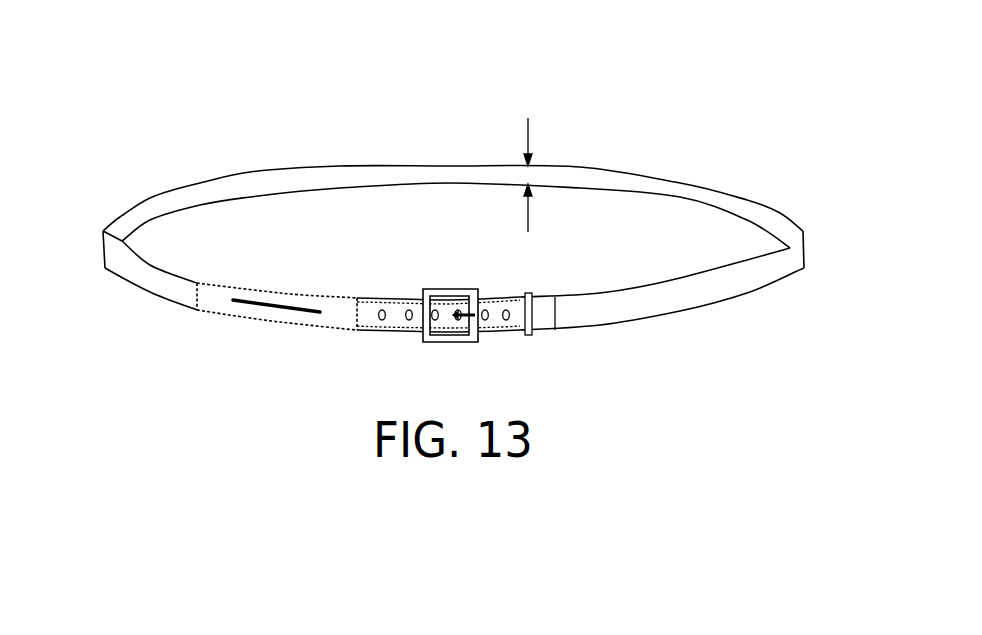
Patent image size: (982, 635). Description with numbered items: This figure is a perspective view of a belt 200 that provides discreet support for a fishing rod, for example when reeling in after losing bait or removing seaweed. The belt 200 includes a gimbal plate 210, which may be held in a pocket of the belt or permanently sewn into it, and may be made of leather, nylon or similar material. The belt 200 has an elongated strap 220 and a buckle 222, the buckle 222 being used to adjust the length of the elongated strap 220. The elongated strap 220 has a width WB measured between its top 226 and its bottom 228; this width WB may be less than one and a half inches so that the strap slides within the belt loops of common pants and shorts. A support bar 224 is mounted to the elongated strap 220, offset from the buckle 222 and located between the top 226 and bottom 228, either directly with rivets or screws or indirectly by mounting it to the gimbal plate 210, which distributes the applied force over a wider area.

The belt 200 is at (436, 177).
The gimbal plate 210 is at (208, 300).
The elongated strap 220 is at (453, 219).
The buckle 222 is at (445, 289).
The support bar 224 is at (280, 298).
The top 226 is at (241, 163).
The bottom 228 is at (251, 213).
The width WB is at (528, 125).